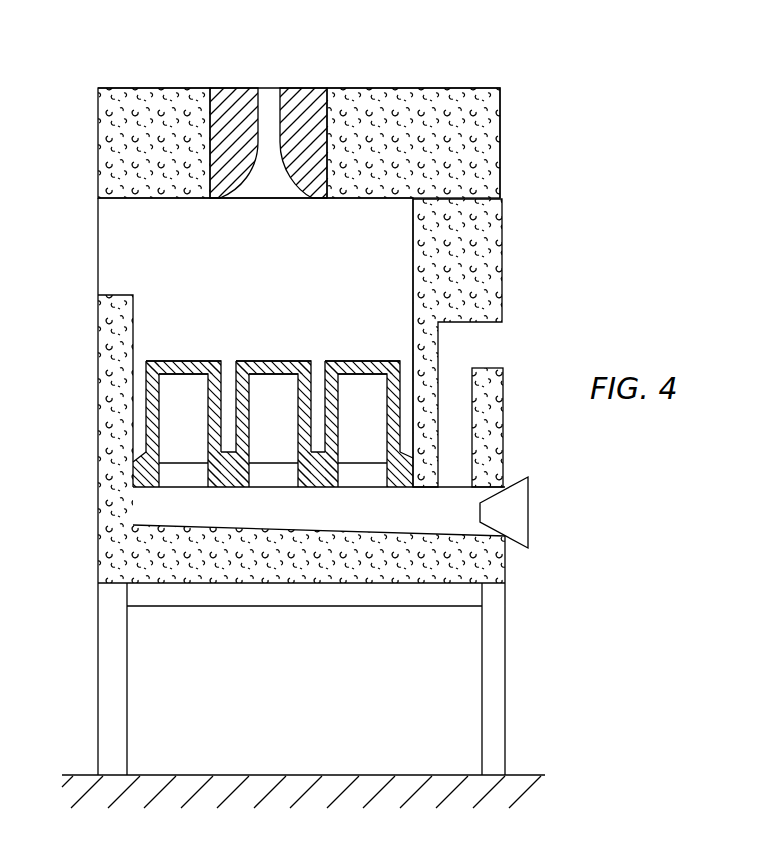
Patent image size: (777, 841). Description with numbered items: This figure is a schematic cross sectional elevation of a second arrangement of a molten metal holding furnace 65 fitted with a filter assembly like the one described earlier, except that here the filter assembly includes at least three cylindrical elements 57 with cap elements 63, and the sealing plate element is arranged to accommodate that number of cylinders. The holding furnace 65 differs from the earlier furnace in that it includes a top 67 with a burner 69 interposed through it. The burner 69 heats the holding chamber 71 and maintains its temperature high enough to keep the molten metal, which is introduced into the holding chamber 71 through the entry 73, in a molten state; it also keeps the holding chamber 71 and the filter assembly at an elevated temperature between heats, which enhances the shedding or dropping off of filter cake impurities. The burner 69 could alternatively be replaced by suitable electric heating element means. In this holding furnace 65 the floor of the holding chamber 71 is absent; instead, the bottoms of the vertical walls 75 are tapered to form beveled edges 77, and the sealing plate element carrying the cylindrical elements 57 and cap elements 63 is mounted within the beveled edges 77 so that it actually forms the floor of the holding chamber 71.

The holding furnace 65 is at (516, 224).
The top 67 is at (427, 87).
The burner 69 is at (300, 87).
The holding chamber 71 is at (107, 238).
The entry 73 is at (98, 275).
The vertical walls 75 is at (131, 342).
The beveled edges 77 is at (118, 477).
The cylindrical elements 57 is at (323, 410).
The cap elements 63 is at (333, 360).